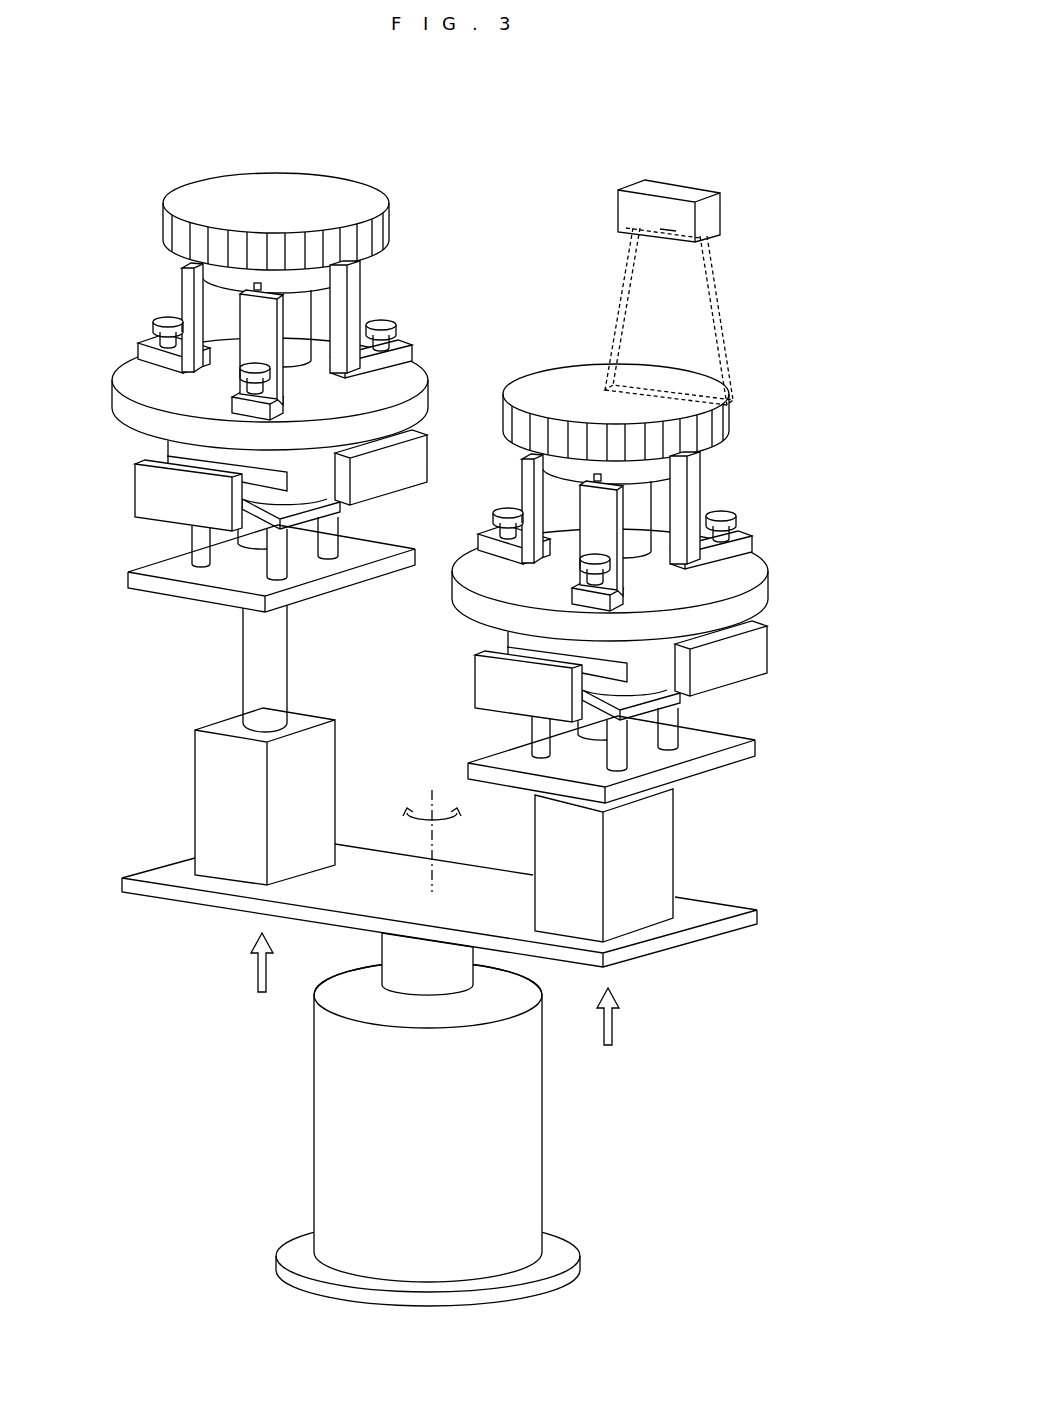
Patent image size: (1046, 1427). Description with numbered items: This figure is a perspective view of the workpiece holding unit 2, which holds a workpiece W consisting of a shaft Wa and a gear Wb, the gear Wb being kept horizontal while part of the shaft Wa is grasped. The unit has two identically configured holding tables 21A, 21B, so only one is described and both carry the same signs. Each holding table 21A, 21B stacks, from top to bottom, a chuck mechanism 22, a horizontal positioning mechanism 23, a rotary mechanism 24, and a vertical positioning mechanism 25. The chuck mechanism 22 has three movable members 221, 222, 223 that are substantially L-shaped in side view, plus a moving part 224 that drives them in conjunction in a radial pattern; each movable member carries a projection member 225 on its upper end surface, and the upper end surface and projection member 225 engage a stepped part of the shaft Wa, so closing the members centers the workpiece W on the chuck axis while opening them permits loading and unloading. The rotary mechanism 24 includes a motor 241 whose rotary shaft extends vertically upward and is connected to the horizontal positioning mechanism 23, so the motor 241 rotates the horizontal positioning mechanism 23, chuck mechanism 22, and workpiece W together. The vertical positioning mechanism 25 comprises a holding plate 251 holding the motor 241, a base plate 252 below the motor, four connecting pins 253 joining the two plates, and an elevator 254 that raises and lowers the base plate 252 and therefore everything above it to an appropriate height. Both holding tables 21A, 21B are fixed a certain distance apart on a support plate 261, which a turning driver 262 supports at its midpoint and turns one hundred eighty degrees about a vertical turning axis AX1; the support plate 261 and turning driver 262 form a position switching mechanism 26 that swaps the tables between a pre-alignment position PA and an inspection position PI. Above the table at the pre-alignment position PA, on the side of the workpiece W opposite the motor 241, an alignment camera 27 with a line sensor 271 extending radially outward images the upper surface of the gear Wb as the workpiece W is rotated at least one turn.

The workpiece holding unit 2 is at (582, 116).
The holding table 21A is at (760, 290).
The holding table 21B is at (160, 145).
The chuck mechanism 22 is at (115, 236).
The movable member 221 is at (357, 302).
The movable member 222 is at (247, 350).
The movable member 223 is at (256, 288).
The moving part 224 is at (118, 378).
The projection member 225 is at (153, 318).
The horizontal positioning mechanism 23 is at (146, 541).
The rotary mechanism 24 is at (333, 652).
The motor 241 is at (250, 548).
The vertical positioning mechanism 25 is at (470, 699).
The holding plate 251 is at (342, 517).
The base plate 252 is at (240, 600).
The connecting pin 253 is at (330, 547).
The elevator 254 is at (207, 792).
The position switching mechanism 26 is at (506, 1075).
The support plate 261 is at (650, 946).
The turning driver 262 is at (517, 1165).
The alignment camera 27 is at (694, 279).
The line sensor 271 is at (668, 226).
The workpiece W is at (501, 319).
The shaft Wa is at (496, 367).
The gear Wb is at (355, 192).
The turning axis AX1 is at (436, 838).
The inspection position PI is at (262, 979).
The pre-alignment position PA is at (607, 1031).